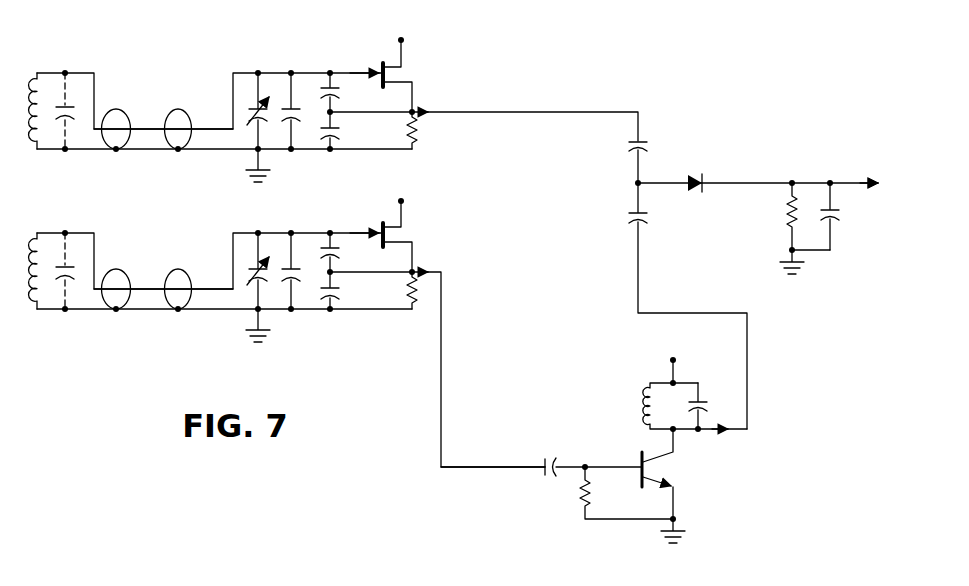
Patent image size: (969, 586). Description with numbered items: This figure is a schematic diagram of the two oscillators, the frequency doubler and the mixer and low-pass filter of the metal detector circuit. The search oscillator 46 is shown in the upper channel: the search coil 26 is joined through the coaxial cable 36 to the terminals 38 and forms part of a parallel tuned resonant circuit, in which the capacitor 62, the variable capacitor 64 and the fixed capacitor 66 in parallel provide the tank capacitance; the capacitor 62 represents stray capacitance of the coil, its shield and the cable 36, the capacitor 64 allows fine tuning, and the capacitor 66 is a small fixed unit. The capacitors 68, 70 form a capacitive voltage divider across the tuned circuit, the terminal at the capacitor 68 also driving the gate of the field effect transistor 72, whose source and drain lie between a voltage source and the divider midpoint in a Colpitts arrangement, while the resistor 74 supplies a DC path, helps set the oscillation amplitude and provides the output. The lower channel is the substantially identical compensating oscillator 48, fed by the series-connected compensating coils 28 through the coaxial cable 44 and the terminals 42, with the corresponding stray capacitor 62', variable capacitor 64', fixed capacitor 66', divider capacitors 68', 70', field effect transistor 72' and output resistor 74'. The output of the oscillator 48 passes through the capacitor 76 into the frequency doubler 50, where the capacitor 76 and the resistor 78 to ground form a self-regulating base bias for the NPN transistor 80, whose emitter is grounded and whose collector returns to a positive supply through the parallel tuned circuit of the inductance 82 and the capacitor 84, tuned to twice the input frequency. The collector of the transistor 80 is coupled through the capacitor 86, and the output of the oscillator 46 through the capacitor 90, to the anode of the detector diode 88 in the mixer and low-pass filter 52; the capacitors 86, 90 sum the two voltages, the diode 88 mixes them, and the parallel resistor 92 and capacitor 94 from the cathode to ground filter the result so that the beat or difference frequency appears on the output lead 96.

The search coil 26 is at (36, 145).
The capacitor 62 is at (67, 96).
The coaxial cable 36 is at (136, 117).
The search oscillator 46 is at (161, 88).
The terminals 38 is at (219, 128).
The variable capacitor 64 is at (251, 112).
The fixed capacitor 66 is at (288, 97).
The capacitor 68 is at (331, 78).
The capacitor 70 is at (319, 148).
The field effect transistor 72 is at (381, 66).
The resistor 74 is at (378, 147).
The compensating coils 28 is at (36, 305).
The capacitor 62' is at (62, 255).
The coaxial cable 44 is at (133, 279).
The compensating oscillator 48 is at (144, 246).
The terminals 42 is at (212, 289).
The variable capacitor 64' is at (259, 270).
The fixed capacitor 66' is at (292, 259).
The capacitor 68' is at (334, 237).
The capacitor 70' is at (323, 307).
The field effect transistor 72' is at (382, 229).
The resistor 74' is at (378, 306).
The capacitor 90 is at (628, 143).
The coupling capacitor 86 is at (627, 216).
The mixer and low-pass filter 52 is at (667, 168).
The mixer or detector diode 88 is at (678, 195).
The resistor 92 is at (787, 212).
The capacitor 94 is at (839, 212).
The output lead 96 is at (846, 182).
The capacitor 76 is at (547, 459).
The resistor 78 is at (580, 502).
The NPN transistor 80 is at (639, 461).
The inductance 82 is at (645, 404).
The capacitor 84 is at (705, 405).
The frequency doubler 50 is at (707, 480).